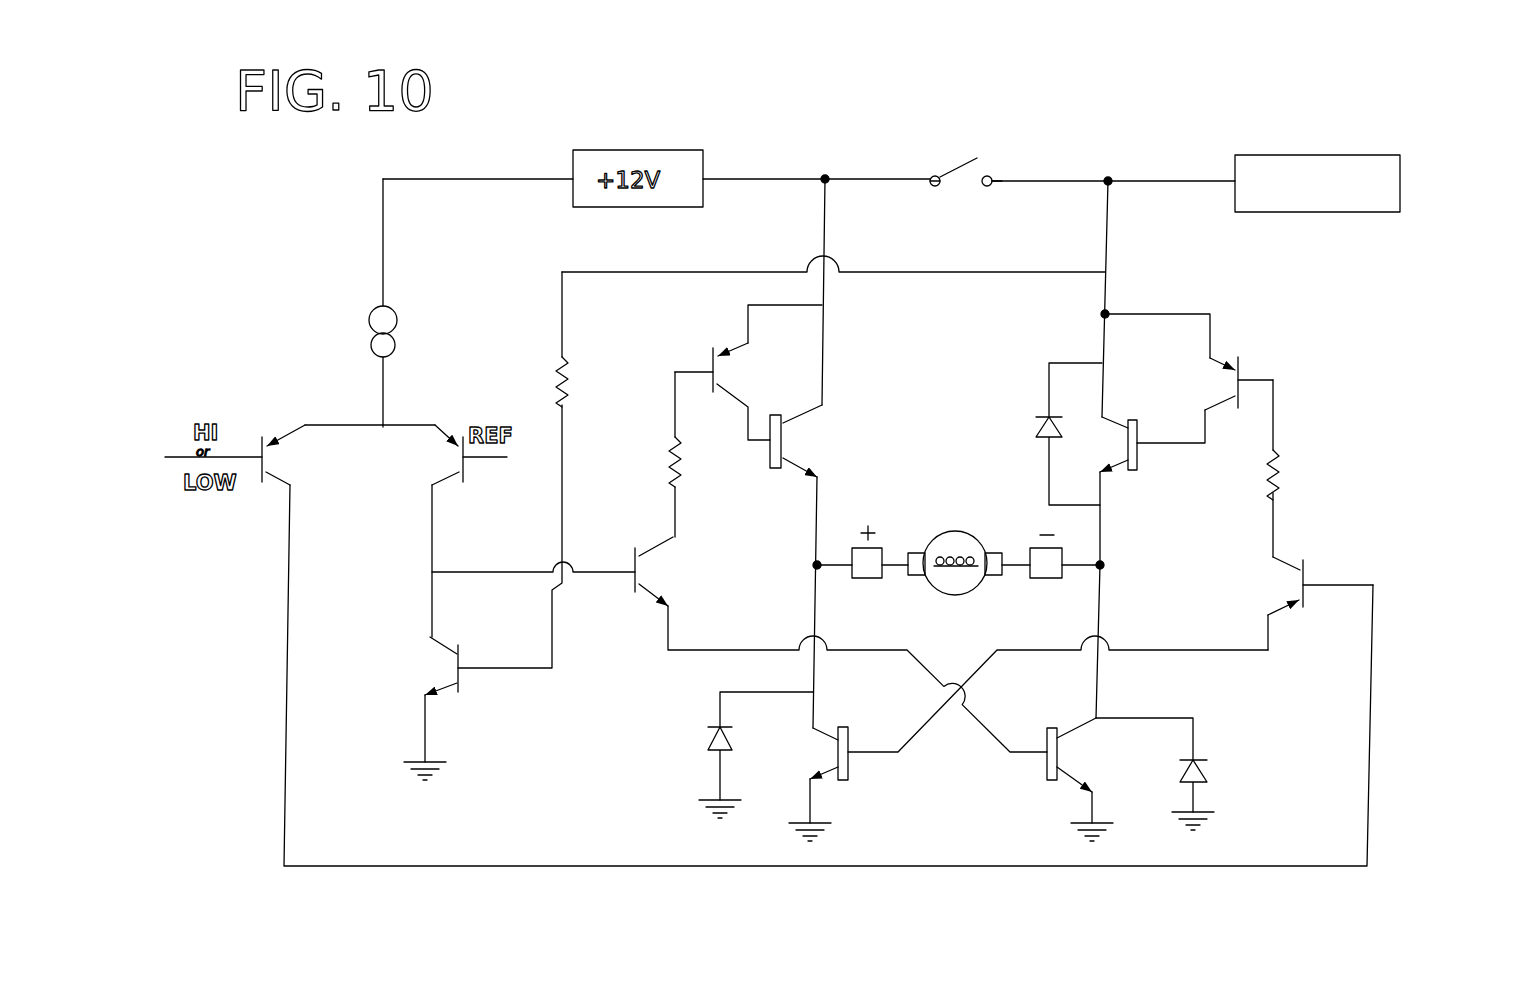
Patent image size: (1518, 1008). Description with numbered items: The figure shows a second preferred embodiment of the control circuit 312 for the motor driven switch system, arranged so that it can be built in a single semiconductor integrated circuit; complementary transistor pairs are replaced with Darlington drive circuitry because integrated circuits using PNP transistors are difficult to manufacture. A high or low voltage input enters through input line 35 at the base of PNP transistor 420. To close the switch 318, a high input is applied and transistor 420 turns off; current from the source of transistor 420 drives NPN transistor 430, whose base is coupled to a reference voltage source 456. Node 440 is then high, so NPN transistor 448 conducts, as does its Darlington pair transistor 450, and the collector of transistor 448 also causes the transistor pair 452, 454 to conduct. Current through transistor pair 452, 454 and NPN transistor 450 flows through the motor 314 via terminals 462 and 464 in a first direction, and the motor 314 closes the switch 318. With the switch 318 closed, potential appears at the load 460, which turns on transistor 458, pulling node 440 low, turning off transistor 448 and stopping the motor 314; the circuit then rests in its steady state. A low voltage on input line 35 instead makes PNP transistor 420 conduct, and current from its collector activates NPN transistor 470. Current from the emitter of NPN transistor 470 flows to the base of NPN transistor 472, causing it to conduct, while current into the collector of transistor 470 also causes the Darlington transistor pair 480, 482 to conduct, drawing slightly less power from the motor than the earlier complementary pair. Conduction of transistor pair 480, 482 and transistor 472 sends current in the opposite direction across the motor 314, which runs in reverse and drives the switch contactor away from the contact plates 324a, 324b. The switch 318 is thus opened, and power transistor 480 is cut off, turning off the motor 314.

The input line 35 is at (180, 456).
The control circuit 312 is at (1458, 279).
The motor 314 is at (962, 531).
The switch 318 is at (952, 168).
The contact plate 324a is at (877, 185).
The contact plate 324b is at (1063, 185).
The PNP transistor 420 is at (291, 528).
The NPN transistor 430 is at (437, 425).
The node 440 is at (432, 500).
The NPN transistor 448 is at (661, 571).
The NPN transistor 450 is at (1066, 775).
The transistor 452 is at (727, 387).
The transistor 454 is at (785, 450).
The reference voltage source 456 is at (566, 373).
The transistor 458 is at (463, 666).
The load 460 is at (1400, 181).
The terminal 462 is at (868, 580).
The terminal 464 is at (1041, 580).
The NPN transistor 470 is at (1283, 565).
The NPN transistor 472 is at (833, 745).
The power transistor 480 is at (1222, 357).
The transistor 482 is at (1125, 446).